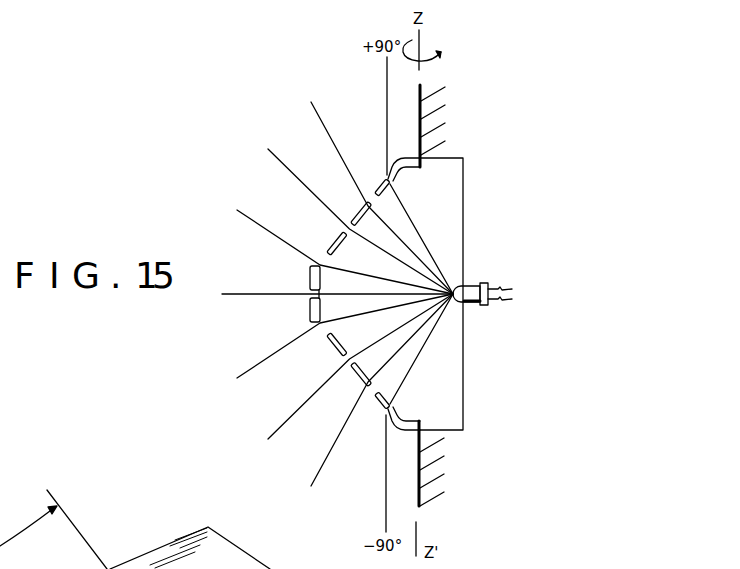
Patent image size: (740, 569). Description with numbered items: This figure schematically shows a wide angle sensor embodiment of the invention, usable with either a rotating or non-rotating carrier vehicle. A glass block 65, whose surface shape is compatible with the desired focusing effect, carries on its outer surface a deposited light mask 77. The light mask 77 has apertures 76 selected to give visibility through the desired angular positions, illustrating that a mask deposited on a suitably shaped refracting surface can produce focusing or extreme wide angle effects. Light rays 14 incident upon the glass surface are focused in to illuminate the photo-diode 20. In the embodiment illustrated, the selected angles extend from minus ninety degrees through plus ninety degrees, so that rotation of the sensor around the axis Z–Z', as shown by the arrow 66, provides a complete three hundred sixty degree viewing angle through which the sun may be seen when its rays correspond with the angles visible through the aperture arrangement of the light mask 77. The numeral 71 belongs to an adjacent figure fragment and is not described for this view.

The light rays 14 is at (316, 108).
The photo-diode 20 is at (470, 290).
The glass block 65 is at (460, 197).
The arrow 66 is at (434, 60).
The apertures 76 is at (341, 234).
The light mask 77 is at (309, 271).
The adjacent figure element 71 is at (270, 567).